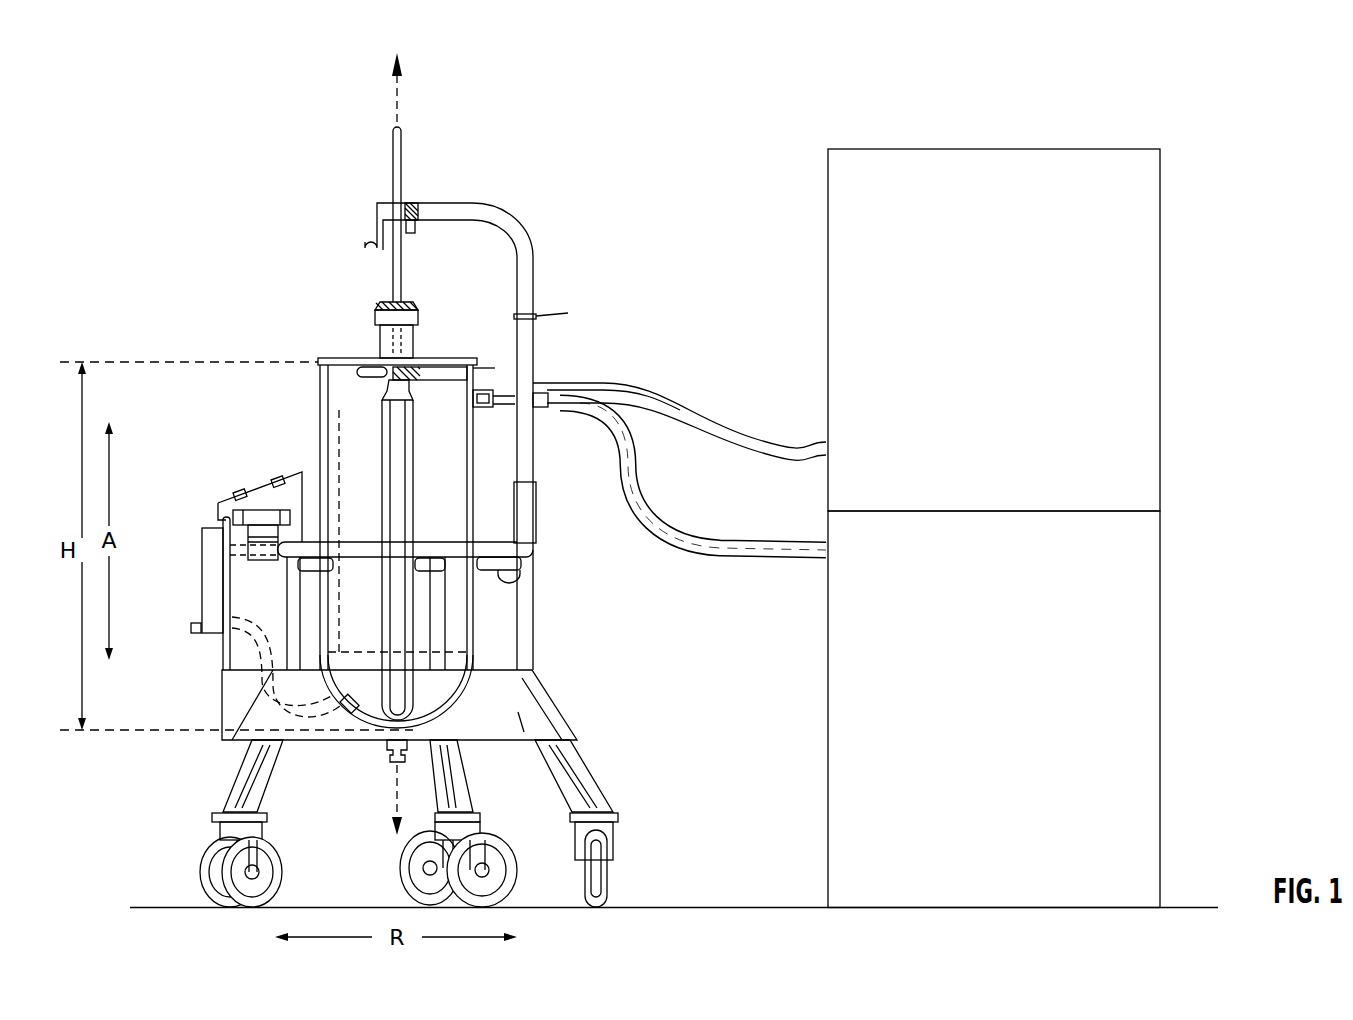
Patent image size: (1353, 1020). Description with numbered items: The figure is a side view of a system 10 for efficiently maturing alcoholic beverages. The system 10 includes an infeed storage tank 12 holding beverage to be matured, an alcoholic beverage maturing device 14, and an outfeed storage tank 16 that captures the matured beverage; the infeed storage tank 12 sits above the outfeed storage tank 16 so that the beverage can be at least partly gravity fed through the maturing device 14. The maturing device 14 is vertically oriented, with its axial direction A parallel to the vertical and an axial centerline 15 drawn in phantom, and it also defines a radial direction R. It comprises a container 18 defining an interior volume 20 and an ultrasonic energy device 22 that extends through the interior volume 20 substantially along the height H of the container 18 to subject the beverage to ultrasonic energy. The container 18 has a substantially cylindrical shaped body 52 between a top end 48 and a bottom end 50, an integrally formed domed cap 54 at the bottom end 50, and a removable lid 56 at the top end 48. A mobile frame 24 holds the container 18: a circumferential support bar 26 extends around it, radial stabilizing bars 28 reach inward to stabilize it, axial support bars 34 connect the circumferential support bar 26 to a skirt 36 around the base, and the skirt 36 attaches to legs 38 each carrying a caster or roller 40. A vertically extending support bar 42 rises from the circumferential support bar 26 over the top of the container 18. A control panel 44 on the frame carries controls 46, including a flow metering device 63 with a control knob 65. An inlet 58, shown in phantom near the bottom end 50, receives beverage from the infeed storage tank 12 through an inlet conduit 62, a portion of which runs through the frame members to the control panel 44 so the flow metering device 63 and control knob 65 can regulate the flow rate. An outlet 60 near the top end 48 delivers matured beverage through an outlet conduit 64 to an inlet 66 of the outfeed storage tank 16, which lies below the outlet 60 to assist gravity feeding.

The system 10 is at (236, 238).
The infeed storage tank 12 is at (1007, 323).
The alcoholic beverage maturing device 14 is at (246, 336).
The axial centerline 15 is at (398, 103).
The outfeed storage tank 16 is at (1007, 708).
The container 18 is at (317, 388).
The interior volume 20 is at (352, 468).
The ultrasonic energy device 22 is at (363, 342).
The mobile frame 24 is at (618, 645).
The circumferential support bar 26 is at (290, 552).
The radial stabilizing bars 28 is at (505, 578).
The axial support bars 34 is at (291, 624).
The skirt 36 is at (547, 710).
The legs 38 is at (245, 783).
The caster or roller 40 is at (172, 848).
The vertically extending support bar 42 is at (527, 278).
The control panel 44 is at (217, 503).
The controls 46 is at (244, 474).
The top end 48 is at (490, 364).
The bottom end 50 is at (482, 661).
The substantially cylindrical shaped body 52 is at (347, 447).
The cap 54 is at (372, 742).
The removable lid 56 is at (448, 366).
The inlet 58 is at (341, 722).
The outlet 60 is at (452, 404).
The inlet conduit 62 is at (720, 425).
The flow metering device 63 is at (199, 568).
The outlet conduit 64 is at (736, 543).
The control knob 65 is at (186, 628).
The inlet of the outfeed storage tank 66 is at (827, 558).